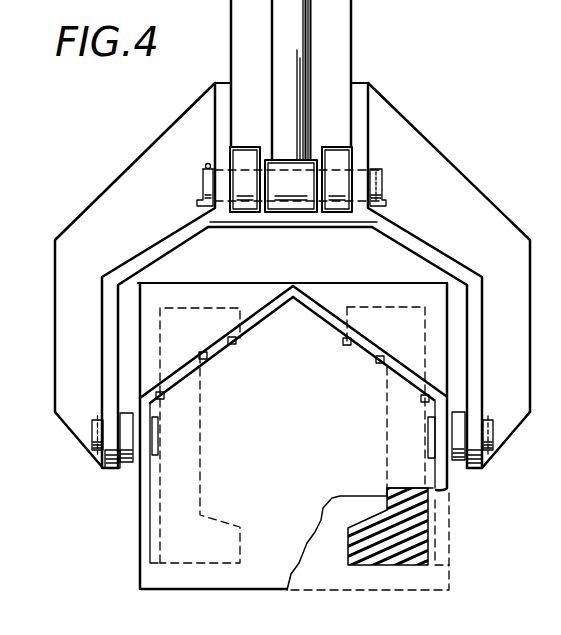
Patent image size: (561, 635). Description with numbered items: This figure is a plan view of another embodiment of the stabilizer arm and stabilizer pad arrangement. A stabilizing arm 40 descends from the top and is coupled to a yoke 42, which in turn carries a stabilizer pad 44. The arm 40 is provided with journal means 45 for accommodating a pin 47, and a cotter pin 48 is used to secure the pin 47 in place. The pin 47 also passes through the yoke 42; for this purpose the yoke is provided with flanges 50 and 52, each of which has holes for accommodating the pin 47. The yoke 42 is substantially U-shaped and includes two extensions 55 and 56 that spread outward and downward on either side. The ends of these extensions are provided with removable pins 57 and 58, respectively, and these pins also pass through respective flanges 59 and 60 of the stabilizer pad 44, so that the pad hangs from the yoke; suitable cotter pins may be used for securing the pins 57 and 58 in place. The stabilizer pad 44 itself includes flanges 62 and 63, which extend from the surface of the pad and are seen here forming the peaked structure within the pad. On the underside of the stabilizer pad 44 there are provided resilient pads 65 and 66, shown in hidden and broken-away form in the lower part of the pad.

The stabilizing arm 40 is at (340, 46).
The yoke 42 is at (442, 197).
The stabilizer pad 44 is at (303, 429).
The journal means 45 is at (335, 178).
The pin 47 is at (200, 186).
The cotter pin 48 is at (207, 165).
The flange 50 is at (362, 132).
The flange 52 is at (222, 105).
The extension 55 is at (77, 413).
The extension 56 is at (508, 412).
The removable pin 57 is at (130, 463).
The removable pin 58 is at (457, 460).
The flange 59 is at (146, 447).
The flange 60 is at (443, 433).
The flange 62 is at (255, 317).
The flange 63 is at (337, 318).
The resilient pad 65 is at (213, 523).
The resilient pad 66 is at (370, 528).